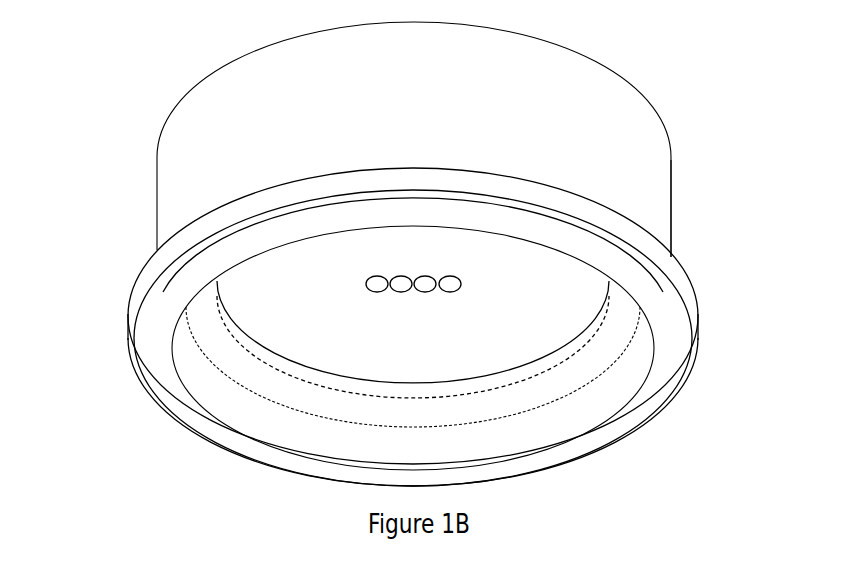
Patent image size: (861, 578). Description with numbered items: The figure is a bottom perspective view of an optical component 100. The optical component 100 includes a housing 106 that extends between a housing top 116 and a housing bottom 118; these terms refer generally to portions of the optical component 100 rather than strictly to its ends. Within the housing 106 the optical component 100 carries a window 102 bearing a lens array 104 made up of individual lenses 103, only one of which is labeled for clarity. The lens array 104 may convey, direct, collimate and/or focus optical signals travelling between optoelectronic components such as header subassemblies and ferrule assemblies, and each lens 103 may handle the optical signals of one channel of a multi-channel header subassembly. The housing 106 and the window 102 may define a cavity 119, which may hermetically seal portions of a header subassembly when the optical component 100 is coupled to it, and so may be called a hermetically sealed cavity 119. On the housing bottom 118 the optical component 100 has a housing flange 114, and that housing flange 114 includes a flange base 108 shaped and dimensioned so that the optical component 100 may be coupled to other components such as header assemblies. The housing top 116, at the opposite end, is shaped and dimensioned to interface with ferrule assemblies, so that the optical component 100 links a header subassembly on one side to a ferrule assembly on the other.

The optical component 100 is at (138, 81).
The window 102 is at (297, 265).
The lens 103 is at (430, 283).
The lens array 104 is at (468, 290).
The housing 106 is at (590, 100).
The flange base 108 is at (675, 342).
The housing flange 114 is at (150, 362).
The housing top 116 is at (218, 42).
The housing bottom 118 is at (236, 476).
The cavity 119 is at (405, 352).